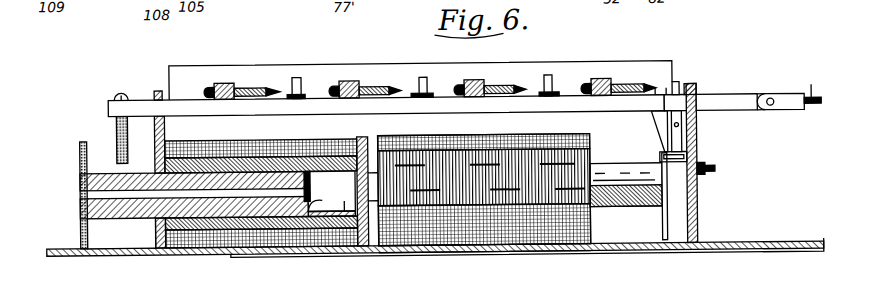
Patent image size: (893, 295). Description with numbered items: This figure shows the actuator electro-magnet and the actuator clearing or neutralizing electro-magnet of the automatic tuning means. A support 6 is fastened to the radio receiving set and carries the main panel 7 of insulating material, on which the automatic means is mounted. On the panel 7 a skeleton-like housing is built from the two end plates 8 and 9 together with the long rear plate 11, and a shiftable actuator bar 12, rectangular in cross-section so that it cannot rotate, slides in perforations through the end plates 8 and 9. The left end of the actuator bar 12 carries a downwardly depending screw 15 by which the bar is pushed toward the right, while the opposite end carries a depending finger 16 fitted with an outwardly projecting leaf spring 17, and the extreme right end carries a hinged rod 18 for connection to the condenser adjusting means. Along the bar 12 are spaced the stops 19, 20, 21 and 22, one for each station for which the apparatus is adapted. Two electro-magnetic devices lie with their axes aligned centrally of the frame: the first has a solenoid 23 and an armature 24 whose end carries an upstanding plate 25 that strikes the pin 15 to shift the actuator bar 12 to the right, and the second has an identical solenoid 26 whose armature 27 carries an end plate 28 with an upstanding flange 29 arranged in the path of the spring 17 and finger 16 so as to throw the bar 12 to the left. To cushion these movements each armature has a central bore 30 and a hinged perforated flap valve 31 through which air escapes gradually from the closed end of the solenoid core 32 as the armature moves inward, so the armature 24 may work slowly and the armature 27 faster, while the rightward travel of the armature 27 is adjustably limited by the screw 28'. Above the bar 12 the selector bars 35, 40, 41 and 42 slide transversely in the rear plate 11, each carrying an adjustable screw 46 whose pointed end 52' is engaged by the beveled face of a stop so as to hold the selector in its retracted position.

The support 6 is at (592, 254).
The main panel 7 is at (468, 254).
The end plate 8 is at (154, 92).
The end plate 9 is at (700, 87).
The rear plate 11 is at (352, 57).
The actuator bar 12 is at (736, 97).
The screw 15 is at (117, 134).
The finger 16 is at (657, 128).
The leaf spring 17 is at (698, 125).
The hinged rod 18 is at (811, 89).
The stop 19 is at (297, 76).
The stop 20 is at (424, 77).
The stop 21 is at (549, 76).
The stop 22 is at (678, 84).
The solenoid 23 is at (262, 143).
The armature 24 is at (121, 233).
The upstanding plate 25 is at (80, 152).
The solenoid 26 is at (492, 137).
The armature 27 is at (625, 210).
The end plate 28 is at (701, 196).
The screw 28' is at (729, 173).
The upstanding flange 29 is at (697, 149).
The central bore 30 is at (181, 254).
The perforated flap valve 31 is at (298, 254).
The solenoid core 32 is at (345, 254).
The selector bar 35 is at (224, 81).
The selector bar 40 is at (352, 80).
The selector bar 41 is at (477, 80).
The selector bar 42 is at (604, 80).
The adjustable screw 46 is at (256, 86).
The pointed end 52' is at (469, 81).